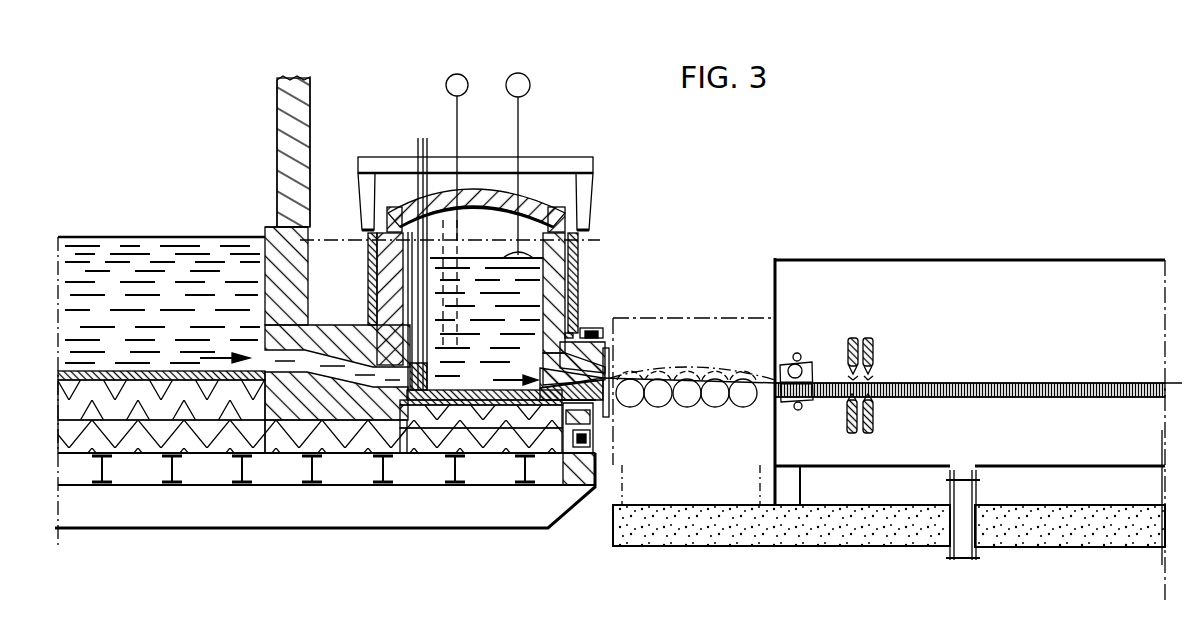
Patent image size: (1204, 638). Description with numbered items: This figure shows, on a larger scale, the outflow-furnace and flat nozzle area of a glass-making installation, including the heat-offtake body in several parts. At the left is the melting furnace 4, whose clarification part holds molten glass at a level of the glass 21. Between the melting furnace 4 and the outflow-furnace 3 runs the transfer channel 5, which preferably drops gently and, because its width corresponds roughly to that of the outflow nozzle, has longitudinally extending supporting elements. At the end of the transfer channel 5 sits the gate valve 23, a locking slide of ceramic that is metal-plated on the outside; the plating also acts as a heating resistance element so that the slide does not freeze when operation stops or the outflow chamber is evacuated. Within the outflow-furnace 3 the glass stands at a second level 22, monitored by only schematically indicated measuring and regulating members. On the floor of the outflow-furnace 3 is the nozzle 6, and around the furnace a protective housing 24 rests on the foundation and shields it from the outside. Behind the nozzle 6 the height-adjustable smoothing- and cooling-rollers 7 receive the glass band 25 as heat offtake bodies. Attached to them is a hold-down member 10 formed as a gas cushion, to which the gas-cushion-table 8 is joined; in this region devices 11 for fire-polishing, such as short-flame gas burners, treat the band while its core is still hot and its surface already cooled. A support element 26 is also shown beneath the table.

The outflow-furnace 3 is at (532, 297).
The melting furnace 4 is at (205, 300).
The transfer channel 5 is at (357, 375).
The nozzle 6 is at (609, 397).
The smoothing- and cooling-rollers 7 is at (688, 398).
The gas-cushion-table 8 is at (823, 385).
The hold-down member 10 is at (783, 362).
The devices for fire-polishing 11 is at (872, 350).
The level of the glass in the clarification part 21 is at (158, 237).
The level of the glass in the outflow-furnace 22 is at (555, 251).
The gate valve 23 is at (428, 378).
The protective housing 24 is at (560, 165).
The glass band 25 is at (622, 372).
The expansion joint / support 26 is at (972, 528).